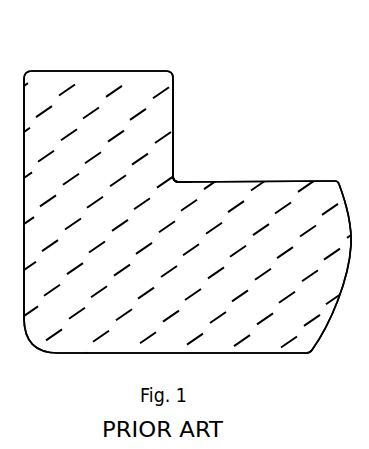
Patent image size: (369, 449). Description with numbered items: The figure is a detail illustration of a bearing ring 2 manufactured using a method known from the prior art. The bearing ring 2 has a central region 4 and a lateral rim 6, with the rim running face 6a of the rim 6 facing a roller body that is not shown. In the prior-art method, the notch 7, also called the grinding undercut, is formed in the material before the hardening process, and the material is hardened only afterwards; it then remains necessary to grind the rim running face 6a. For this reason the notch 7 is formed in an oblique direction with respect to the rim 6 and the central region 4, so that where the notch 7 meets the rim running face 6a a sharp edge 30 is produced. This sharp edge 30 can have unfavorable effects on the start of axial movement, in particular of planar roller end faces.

The bearing ring 2 is at (262, 71).
The central region 4 is at (252, 213).
The lateral rim 6 is at (123, 107).
The rim running face 6a is at (169, 182).
The edge 30 is at (175, 174).
The notch 7 is at (179, 176).